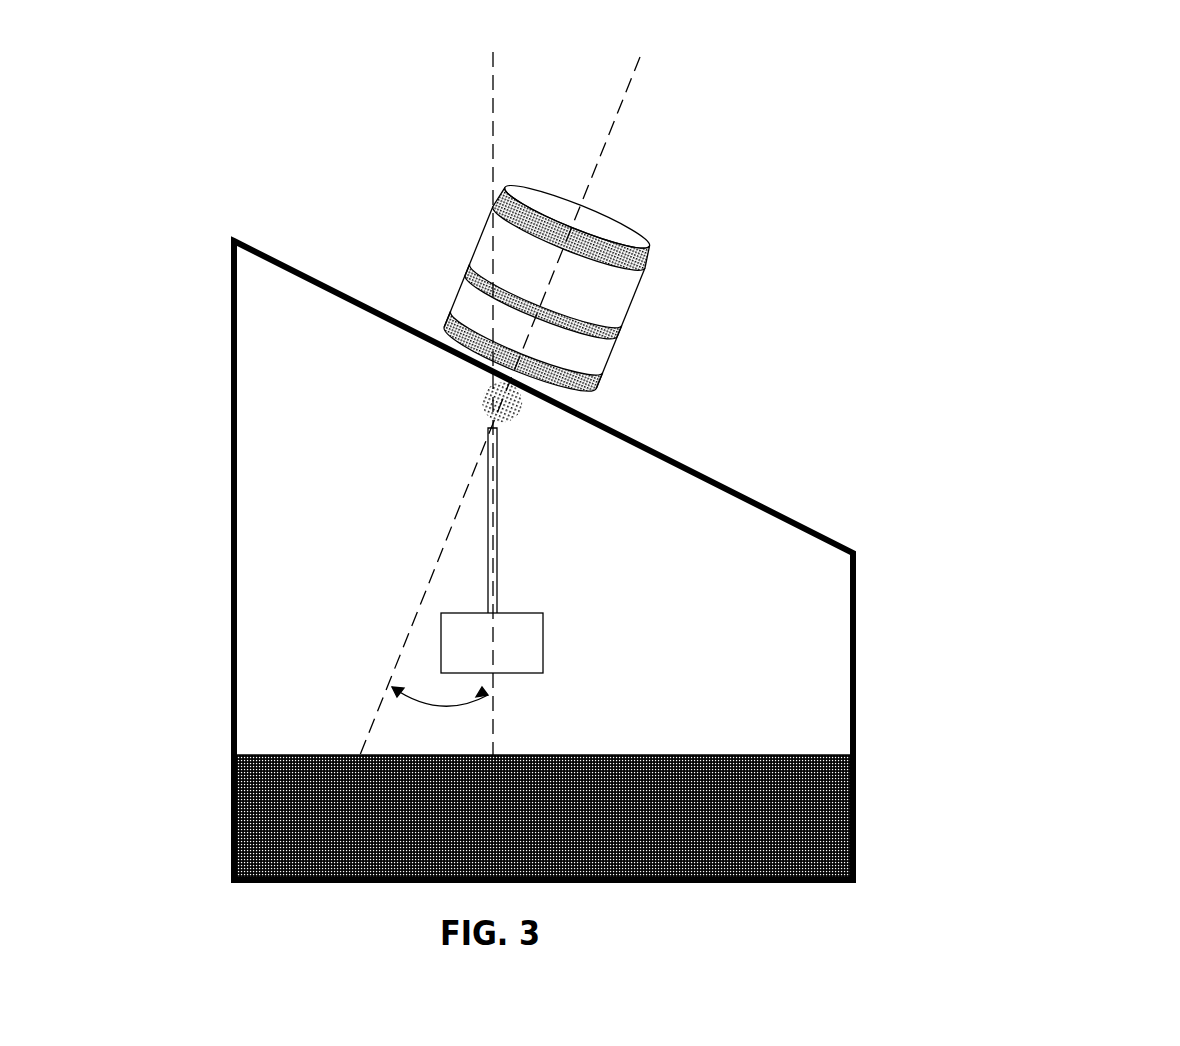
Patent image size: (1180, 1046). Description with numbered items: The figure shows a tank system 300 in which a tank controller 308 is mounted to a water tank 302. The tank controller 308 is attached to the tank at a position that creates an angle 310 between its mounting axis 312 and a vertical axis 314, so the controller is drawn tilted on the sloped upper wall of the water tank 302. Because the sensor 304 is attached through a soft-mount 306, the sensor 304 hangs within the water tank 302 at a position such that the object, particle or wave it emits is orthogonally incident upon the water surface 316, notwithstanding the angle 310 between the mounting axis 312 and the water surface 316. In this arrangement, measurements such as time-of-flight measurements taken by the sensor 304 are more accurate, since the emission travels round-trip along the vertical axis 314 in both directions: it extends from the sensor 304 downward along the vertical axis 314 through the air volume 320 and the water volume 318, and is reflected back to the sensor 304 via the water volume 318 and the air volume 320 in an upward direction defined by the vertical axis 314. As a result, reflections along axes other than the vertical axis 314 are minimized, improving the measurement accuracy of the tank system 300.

The tank system 300 is at (1157, 524).
The water tank 302 is at (740, 495).
The sensor 304 is at (527, 668).
The soft-mount 306 is at (487, 428).
The tank controller 308 is at (612, 285).
The angle 310 is at (458, 705).
The mounting axis 312 is at (627, 93).
The vertical axis 314 is at (493, 73).
The water surface 316 is at (693, 755).
The water volume 318 is at (543, 816).
The air volume 320 is at (724, 644).